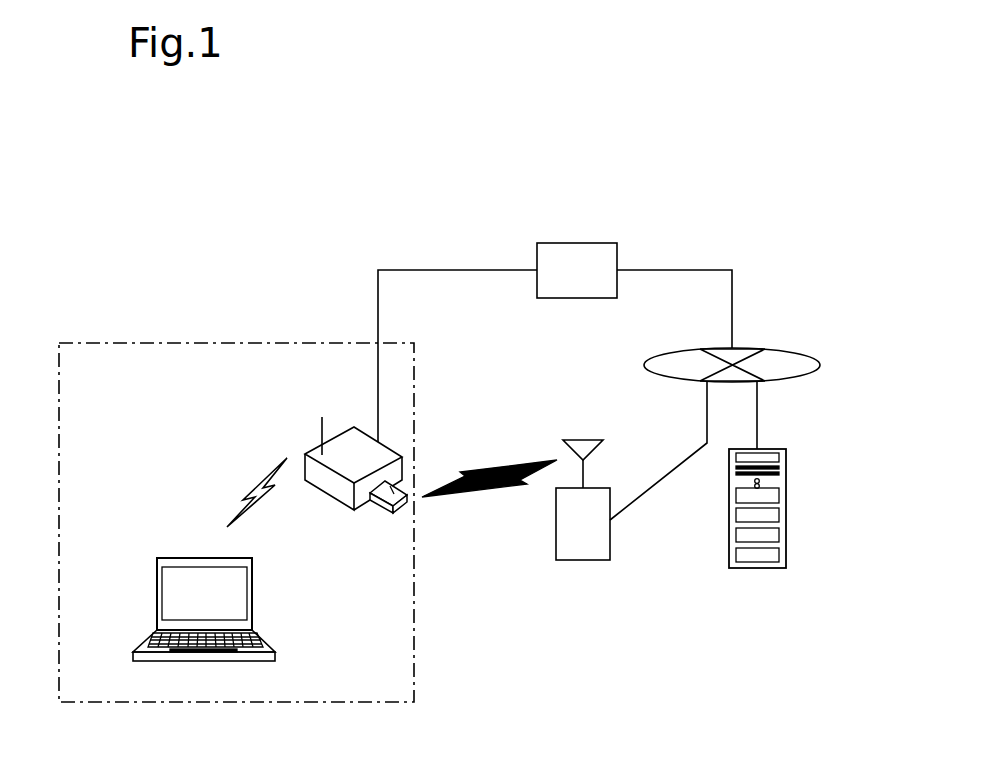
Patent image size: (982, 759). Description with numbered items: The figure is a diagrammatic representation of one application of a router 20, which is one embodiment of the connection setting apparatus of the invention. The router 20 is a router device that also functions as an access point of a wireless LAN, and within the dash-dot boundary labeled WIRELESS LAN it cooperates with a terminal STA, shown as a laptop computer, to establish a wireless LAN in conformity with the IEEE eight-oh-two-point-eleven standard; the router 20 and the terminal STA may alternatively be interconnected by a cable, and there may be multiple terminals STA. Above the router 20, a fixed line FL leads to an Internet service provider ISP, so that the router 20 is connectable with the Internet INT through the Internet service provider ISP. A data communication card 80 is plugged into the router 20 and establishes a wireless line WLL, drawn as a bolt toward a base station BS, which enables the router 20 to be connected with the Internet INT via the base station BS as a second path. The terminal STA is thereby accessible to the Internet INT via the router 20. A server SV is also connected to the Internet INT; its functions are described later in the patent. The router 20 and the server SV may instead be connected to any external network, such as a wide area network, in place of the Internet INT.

The router 20 is at (303, 433).
The data communication card 80 is at (383, 508).
The terminal STA is at (137, 557).
The fixed line FL is at (408, 270).
The Internet service provider ISP is at (577, 270).
The Internet INT is at (792, 350).
The server SV is at (800, 448).
The base station BS is at (583, 500).
The wireless line WLL is at (508, 465).
The wireless LAN WIRELESS LAN is at (414, 652).